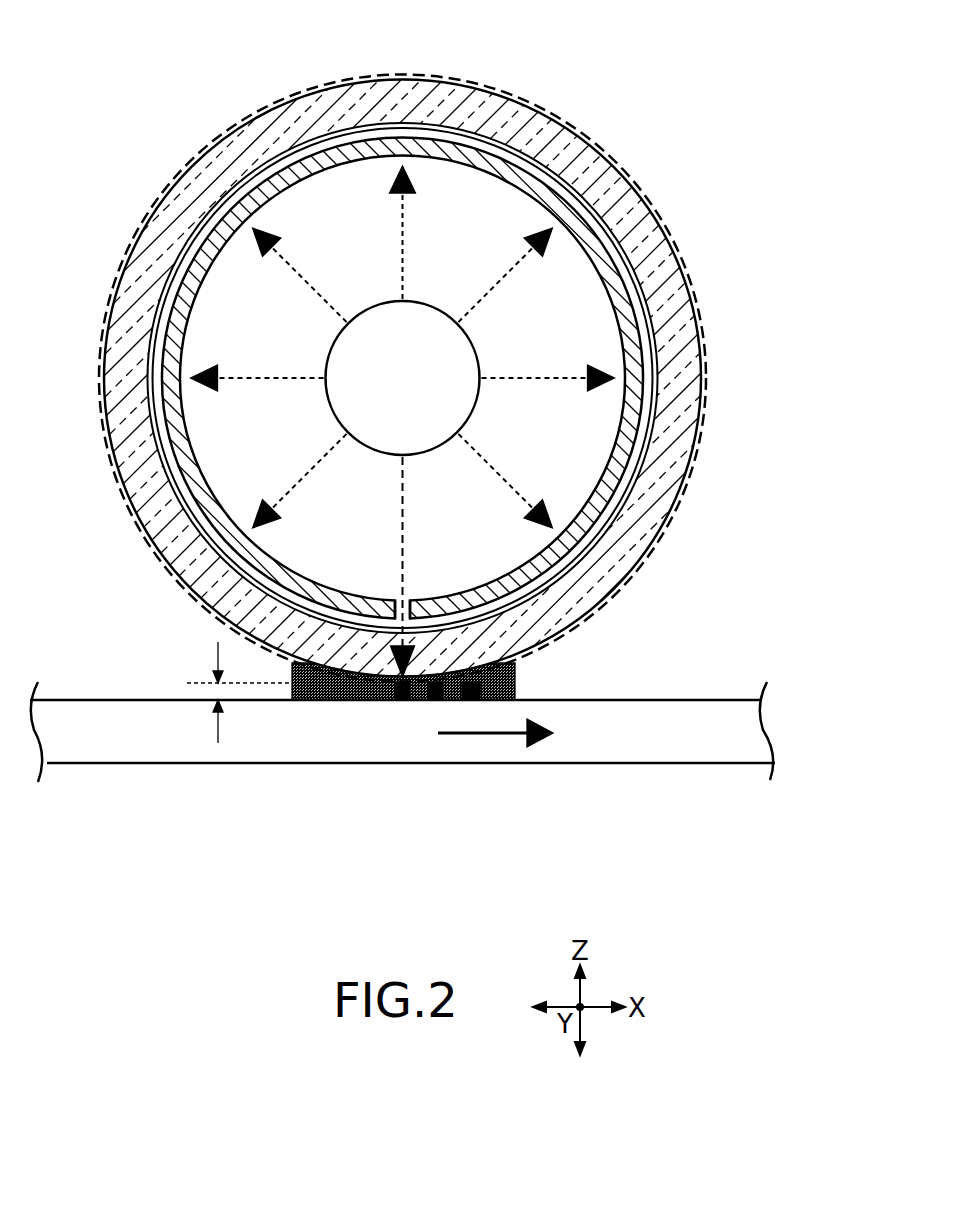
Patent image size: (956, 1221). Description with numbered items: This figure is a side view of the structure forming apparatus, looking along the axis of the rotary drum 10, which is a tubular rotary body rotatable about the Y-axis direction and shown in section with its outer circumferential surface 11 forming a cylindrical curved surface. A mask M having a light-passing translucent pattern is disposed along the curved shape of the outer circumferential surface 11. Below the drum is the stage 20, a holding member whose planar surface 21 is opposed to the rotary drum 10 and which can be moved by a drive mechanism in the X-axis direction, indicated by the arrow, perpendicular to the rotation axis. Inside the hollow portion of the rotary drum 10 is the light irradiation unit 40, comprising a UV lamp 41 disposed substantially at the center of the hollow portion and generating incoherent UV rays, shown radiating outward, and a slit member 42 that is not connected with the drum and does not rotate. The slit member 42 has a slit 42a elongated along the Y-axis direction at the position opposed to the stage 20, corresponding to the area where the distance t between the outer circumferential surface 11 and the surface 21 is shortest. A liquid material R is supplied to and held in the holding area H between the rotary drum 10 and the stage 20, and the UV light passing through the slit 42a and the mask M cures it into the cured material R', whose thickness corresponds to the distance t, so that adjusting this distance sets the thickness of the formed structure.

The rotary drum 10 is at (448, 82).
The outer circumferential surface 11 is at (590, 618).
The stage 20 is at (88, 753).
The surface 21 is at (102, 700).
The light irradiation unit 40 is at (501, 378).
The UV lamp 41 is at (455, 348).
The slit member 42 is at (640, 367).
The slit 42a is at (398, 610).
The mask M is at (647, 560).
The holding area H is at (524, 677).
The liquid material R is at (403, 743).
The cured material R' is at (433, 753).
The distance t is at (239, 691).